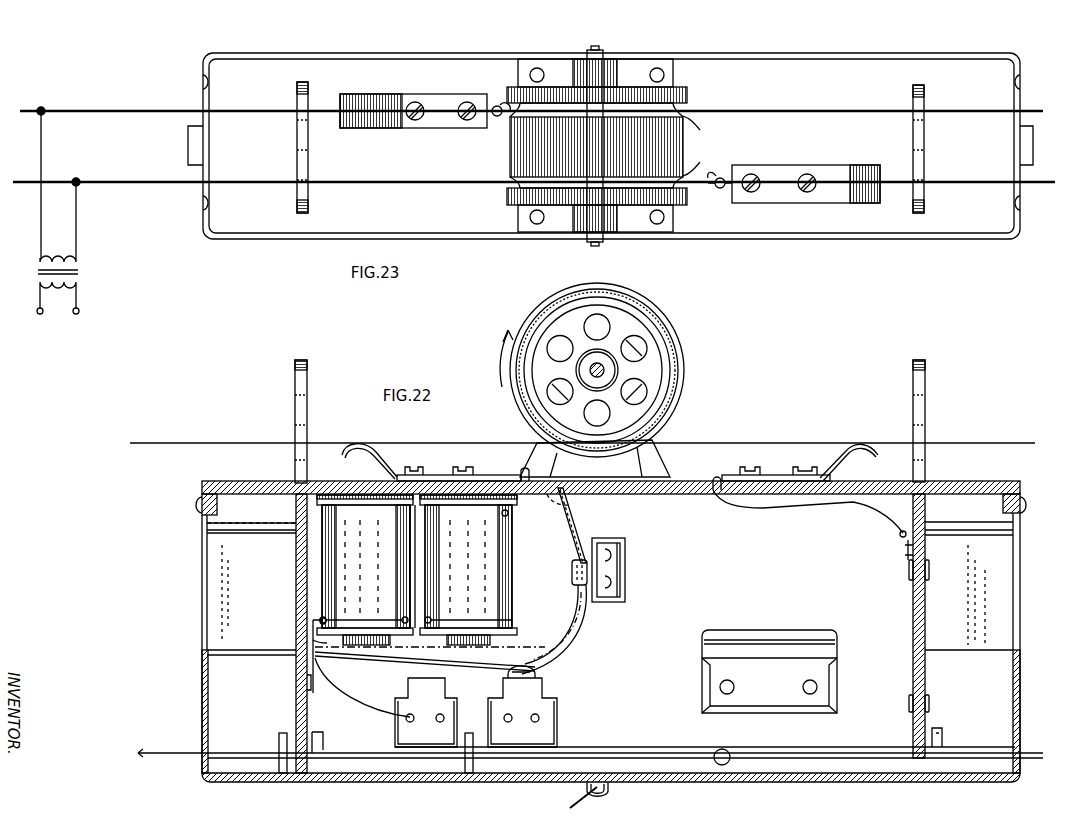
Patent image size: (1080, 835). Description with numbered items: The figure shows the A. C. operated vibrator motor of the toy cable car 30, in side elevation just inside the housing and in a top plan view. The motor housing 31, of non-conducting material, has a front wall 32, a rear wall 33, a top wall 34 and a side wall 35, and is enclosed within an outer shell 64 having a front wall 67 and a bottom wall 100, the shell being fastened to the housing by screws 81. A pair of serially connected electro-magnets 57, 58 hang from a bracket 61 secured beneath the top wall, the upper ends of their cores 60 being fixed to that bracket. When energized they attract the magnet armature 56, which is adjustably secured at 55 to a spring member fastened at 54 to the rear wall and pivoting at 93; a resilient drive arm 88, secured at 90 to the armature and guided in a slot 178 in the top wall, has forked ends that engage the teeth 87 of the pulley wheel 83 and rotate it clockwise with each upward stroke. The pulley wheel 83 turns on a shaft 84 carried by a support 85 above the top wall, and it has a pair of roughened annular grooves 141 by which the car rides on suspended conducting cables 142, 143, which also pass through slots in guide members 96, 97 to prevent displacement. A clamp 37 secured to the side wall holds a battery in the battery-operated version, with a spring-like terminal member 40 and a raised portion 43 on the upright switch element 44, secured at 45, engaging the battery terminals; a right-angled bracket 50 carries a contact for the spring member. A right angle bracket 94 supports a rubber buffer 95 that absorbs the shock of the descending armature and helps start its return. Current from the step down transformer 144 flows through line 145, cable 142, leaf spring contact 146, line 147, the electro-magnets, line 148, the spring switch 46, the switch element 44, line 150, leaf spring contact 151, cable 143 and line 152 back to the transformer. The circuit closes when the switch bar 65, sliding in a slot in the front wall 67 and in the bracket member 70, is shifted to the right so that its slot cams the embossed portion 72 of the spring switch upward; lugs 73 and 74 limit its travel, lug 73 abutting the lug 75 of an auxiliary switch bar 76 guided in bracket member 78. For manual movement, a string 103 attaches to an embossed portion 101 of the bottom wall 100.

In FIG. 23, the cable car 30 is at (843, 53).
In FIG. 22, the cable car 30 is at (195, 561).
In FIG. 23, the motor housing 31 is at (494, 59).
In FIG. 22, the motor housing 31 is at (272, 481).
In FIG. 22, the front wall 32 is at (925, 643).
In FIG. 22, the rear wall 33 is at (297, 622).
In FIG. 23, the top wall 34 is at (437, 59).
In FIG. 22, the top wall 34 is at (345, 481).
In FIG. 22, the side wall 35 is at (673, 748).
In FIG. 22, the clamp 37 is at (713, 643).
In FIG. 22, the terminal member 40 is at (615, 552).
In FIG. 22, the raised portion 43 is at (908, 541).
In FIG. 22, the switch element 44 is at (913, 643).
In FIG. 22, the fastening 45 is at (929, 570).
In FIG. 22, the spring switch 46 is at (844, 753).
In FIG. 22, the right-angled bracket 50 is at (418, 693).
In FIG. 22, the fastening 54 is at (297, 682).
In FIG. 22, the adjustment 55 is at (333, 643).
In FIG. 22, the magnet armature 56 is at (553, 652).
In FIG. 22, the electro-magnet 57 is at (335, 563).
In FIG. 22, the electro-magnet 58 is at (483, 585).
In FIG. 22, the cores 60 is at (366, 636).
In FIG. 22, the bracket 61 is at (368, 500).
In FIG. 23, the outer shell 64 is at (804, 251).
In FIG. 22, the outer shell 64 is at (202, 690).
In FIG. 23, the switch bar 65 is at (1033, 150).
In FIG. 22, the switch bar 65 is at (827, 753).
In FIG. 22, the front wall of shell 67 is at (1020, 660).
In FIG. 22, the bracket member 70 is at (473, 745).
In FIG. 22, the embossed portion 72 is at (708, 754).
In FIG. 22, the lug 73 is at (323, 740).
In FIG. 22, the lug 74 is at (940, 732).
In FIG. 22, the lug 75 is at (312, 733).
In FIG. 23, the auxiliary switch bar 76 is at (188, 145).
In FIG. 22, the auxiliary switch bar 76 is at (186, 752).
In FIG. 22, the bracket member 78 is at (279, 748).
In FIG. 23, the screws 81 is at (203, 82).
In FIG. 22, the screws 81 is at (202, 503).
In FIG. 23, the pulley wheel 83 is at (645, 92).
In FIG. 22, the pulley wheel 83 is at (667, 380).
In FIG. 23, the wheel shaft 84 is at (597, 50).
In FIG. 22, the wheel shaft 84 is at (590, 370).
In FIG. 23, the wheel support bracket 85 is at (673, 76).
In FIG. 22, the wheel support bracket 85 is at (660, 457).
In FIG. 22, the teeth 87 is at (525, 420).
In FIG. 23, the drive arm 88 is at (510, 147).
In FIG. 22, the drive arm 88 is at (580, 536).
In FIG. 22, the fastening 90 is at (572, 573).
In FIG. 22, the pivot 93 is at (317, 650).
In FIG. 22, the right angle bracket 94 is at (545, 713).
In FIG. 22, the buffer 95 is at (535, 675).
In FIG. 23, the guide member 96 is at (297, 150).
In FIG. 22, the guide member 96 is at (307, 412).
In FIG. 23, the guide member 97 is at (913, 103).
In FIG. 22, the guide member 97 is at (913, 412).
In FIG. 22, the bottom wall 100 is at (767, 782).
In FIG. 22, the embossed portion 101 is at (610, 790).
In FIG. 22, the string 103 is at (566, 806).
In FIG. 23, the annular grooves 141 is at (702, 146).
In FIG. 23, the conducting cable 142 is at (962, 111).
In FIG. 23, the conducting cable 143 is at (977, 183).
In FIG. 22, the conducting cable 143 is at (986, 443).
In FIG. 23, the step down transformer 144 is at (78, 277).
In FIG. 23, the line 145 is at (41, 222).
In FIG. 23, the leaf spring contact 146 is at (393, 98).
In FIG. 22, the leaf spring contact 146 is at (388, 456).
In FIG. 23, the line 147 is at (497, 102).
In FIG. 22, the line 147 is at (512, 476).
In FIG. 22, the line 148 is at (362, 706).
In FIG. 23, the line 150 is at (720, 176).
In FIG. 22, the line 150 is at (820, 506).
In FIG. 23, the leaf spring contact 151 is at (860, 166).
In FIG. 22, the leaf spring contact 151 is at (842, 455).
In FIG. 23, the line 152 is at (76, 215).
In FIG. 22, the slot 178 is at (575, 503).